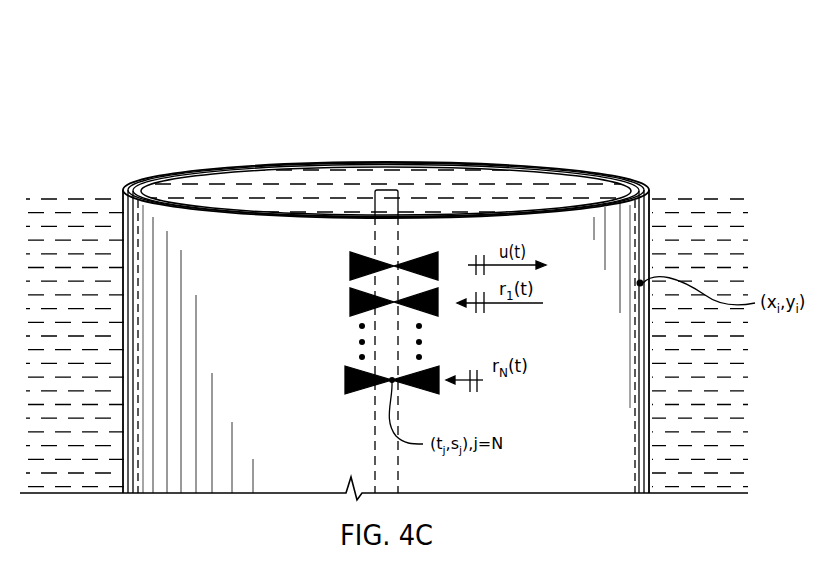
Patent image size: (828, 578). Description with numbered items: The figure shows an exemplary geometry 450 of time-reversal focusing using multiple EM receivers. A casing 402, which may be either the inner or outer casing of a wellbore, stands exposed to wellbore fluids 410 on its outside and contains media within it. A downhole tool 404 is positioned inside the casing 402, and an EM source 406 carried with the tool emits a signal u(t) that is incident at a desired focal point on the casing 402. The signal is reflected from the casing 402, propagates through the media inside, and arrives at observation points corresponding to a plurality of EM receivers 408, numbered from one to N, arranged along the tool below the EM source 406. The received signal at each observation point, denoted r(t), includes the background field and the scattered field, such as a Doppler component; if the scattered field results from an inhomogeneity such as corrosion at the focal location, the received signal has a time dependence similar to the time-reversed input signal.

The casing 402 is at (648, 484).
The downhole tool 404 is at (372, 200).
The EM source 406 is at (350, 257).
The EM receiver 408 is at (345, 370).
The wellbore fluids 410 is at (473, 199).
The geometry of TRF using multiple EM receivers 450 is at (133, 100).